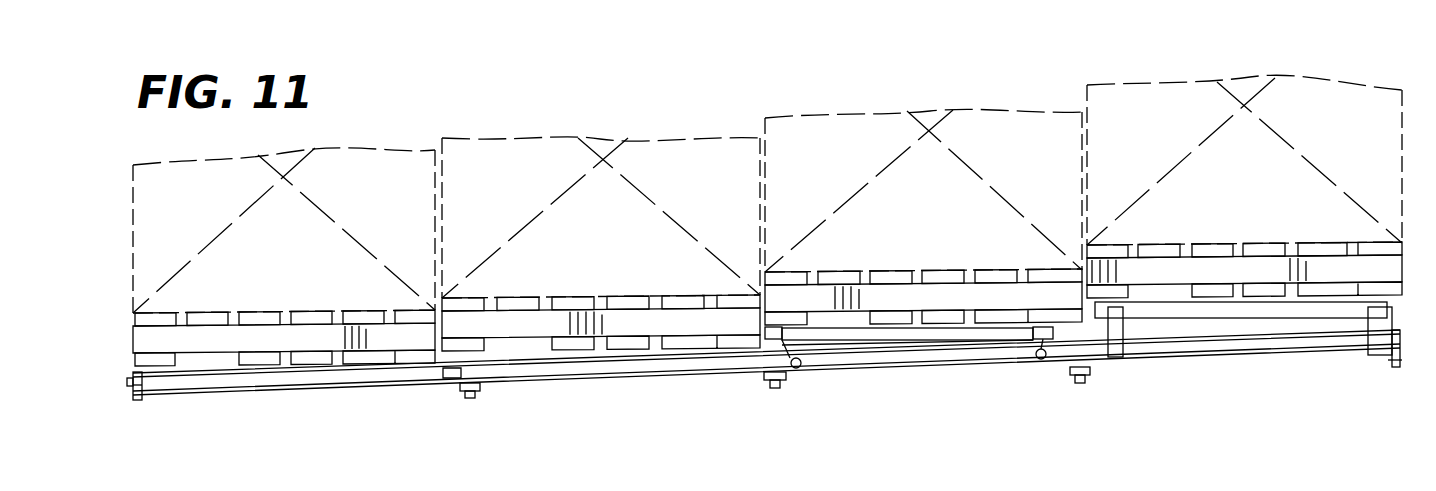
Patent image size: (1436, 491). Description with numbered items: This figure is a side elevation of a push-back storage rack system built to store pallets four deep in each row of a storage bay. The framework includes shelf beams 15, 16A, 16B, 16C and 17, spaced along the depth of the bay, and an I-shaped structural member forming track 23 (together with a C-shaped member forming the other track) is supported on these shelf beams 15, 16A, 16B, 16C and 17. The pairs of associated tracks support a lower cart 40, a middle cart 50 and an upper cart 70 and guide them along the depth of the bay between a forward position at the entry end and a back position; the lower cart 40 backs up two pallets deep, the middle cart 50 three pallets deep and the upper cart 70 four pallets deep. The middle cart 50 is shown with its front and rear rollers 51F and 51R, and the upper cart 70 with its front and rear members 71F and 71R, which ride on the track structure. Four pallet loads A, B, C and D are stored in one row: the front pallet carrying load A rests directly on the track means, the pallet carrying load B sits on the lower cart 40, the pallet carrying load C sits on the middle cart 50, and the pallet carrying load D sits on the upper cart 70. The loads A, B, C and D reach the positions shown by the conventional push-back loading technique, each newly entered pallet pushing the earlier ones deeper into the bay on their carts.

The shelf beam 15 is at (139, 402).
The shelf beam 17 is at (1394, 368).
The track 23 is at (362, 386).
The lower cart 40 is at (528, 360).
The shelf beam 16A is at (467, 398).
The shelf beam 16B is at (772, 390).
The shelf beam 16C is at (1085, 385).
The middle cart 50 is at (926, 336).
The front roller 51F is at (813, 370).
The rear roller 51R is at (1032, 362).
The upper cart 70 is at (1251, 316).
The front leg 71F is at (1121, 358).
The rear leg 71R is at (1373, 352).
The pallet load A is at (360, 178).
The pallet load B is at (495, 168).
The pallet load C is at (875, 147).
The pallet load D is at (1258, 147).